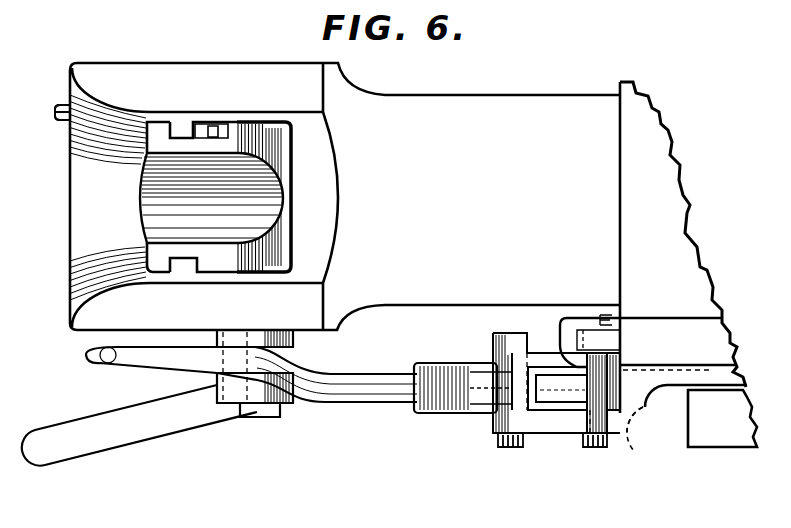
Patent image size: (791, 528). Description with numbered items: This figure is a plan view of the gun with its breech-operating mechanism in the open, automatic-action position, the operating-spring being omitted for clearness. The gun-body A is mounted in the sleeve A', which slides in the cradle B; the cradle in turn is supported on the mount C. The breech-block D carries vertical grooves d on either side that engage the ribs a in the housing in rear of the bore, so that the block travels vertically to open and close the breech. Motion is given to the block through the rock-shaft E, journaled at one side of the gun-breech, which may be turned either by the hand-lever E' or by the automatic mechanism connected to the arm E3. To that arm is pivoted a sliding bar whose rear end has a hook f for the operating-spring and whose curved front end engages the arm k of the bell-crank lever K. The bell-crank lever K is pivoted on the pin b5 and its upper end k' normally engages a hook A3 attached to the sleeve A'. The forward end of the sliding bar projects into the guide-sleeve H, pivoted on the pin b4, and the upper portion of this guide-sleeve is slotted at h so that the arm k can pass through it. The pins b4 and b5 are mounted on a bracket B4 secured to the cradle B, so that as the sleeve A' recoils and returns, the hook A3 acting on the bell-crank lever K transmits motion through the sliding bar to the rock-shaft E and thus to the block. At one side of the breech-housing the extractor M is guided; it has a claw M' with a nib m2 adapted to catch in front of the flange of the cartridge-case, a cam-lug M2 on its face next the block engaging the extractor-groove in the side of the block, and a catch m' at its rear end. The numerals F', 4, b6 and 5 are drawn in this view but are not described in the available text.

The gun-body A is at (345, 238).
The sleeve A' is at (683, 234).
The hook A3 is at (577, 318).
The cradle B is at (678, 344).
The bracket B4 is at (647, 430).
The mount C is at (722, 418).
The breech-block D is at (125, 143).
The extractor M is at (48, 129).
The catch m' is at (51, 95).
The claw M' is at (304, 193).
The nib m2 is at (292, 137).
The cam-lug M2 is at (213, 123).
The ribs a is at (183, 125).
The vertical grooves d is at (153, 121).
The rock-shaft E is at (255, 391).
The arm E3 is at (217, 385).
The hand-lever E' is at (139, 439).
The hook f is at (97, 358).
The bent tube F' is at (317, 370).
The guide-sleeve H is at (465, 406).
The inner tube 4 is at (428, 384).
The bell-crank lever K is at (630, 438).
The arm k is at (556, 414).
The upper end k' is at (624, 380).
The slot h is at (570, 402).
The pin b4 is at (512, 448).
The pin b5 is at (596, 448).
The bolt b6 is at (627, 395).
The rounded corner 5 is at (660, 403).